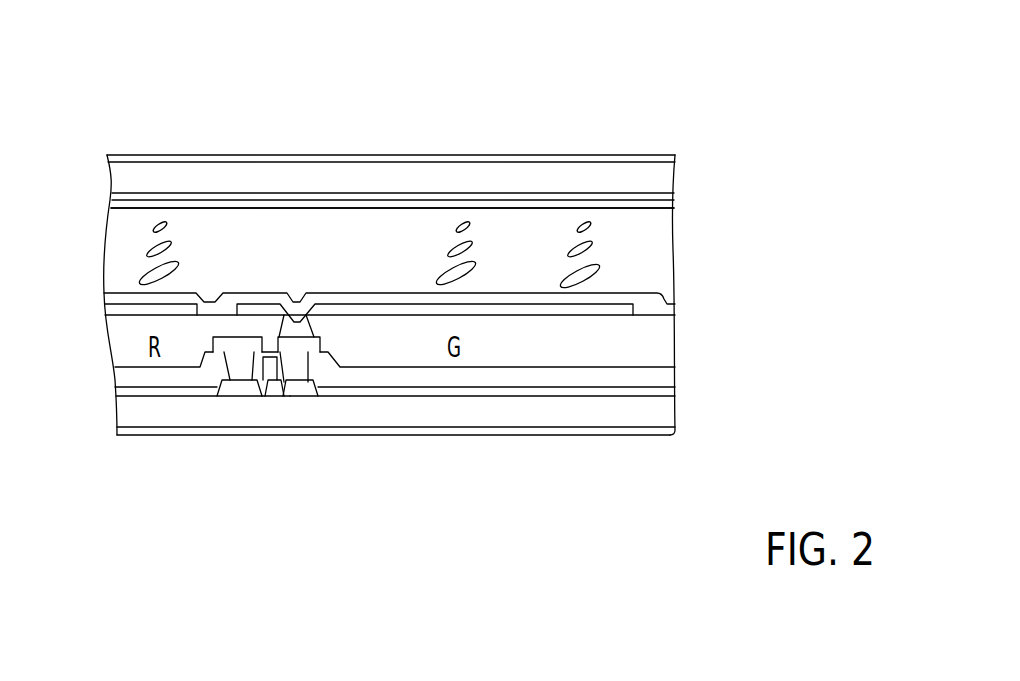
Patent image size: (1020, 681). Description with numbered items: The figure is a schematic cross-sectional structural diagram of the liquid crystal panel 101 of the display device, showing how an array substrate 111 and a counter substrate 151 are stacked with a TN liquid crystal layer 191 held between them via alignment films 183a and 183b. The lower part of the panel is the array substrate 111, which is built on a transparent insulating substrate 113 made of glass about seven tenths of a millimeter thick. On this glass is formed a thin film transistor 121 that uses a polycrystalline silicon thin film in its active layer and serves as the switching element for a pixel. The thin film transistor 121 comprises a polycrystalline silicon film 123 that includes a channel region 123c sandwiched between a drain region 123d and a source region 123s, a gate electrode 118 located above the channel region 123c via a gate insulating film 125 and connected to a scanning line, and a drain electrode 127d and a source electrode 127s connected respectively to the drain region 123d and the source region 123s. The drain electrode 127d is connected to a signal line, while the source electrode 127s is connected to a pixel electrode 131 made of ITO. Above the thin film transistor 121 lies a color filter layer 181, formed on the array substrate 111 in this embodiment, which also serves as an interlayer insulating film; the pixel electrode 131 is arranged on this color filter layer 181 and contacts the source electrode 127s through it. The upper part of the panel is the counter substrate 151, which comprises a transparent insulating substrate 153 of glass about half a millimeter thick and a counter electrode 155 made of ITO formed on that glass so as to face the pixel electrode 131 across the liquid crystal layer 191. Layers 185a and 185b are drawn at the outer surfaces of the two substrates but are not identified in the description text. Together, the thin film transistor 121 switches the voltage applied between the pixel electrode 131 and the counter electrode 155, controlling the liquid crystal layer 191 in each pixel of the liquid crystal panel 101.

The liquid crystal panel 101 is at (548, 98).
The array substrate 111 is at (708, 393).
The transparent insulating substrate 113 is at (670, 413).
The gate electrode 118 is at (268, 358).
The thin film transistor 121 is at (278, 414).
The polycrystalline silicon film 123 is at (248, 476).
The drain region 123d is at (233, 391).
The channel region 123c is at (270, 394).
The source region 123s is at (330, 448).
The gate insulating film 125 is at (283, 368).
The drain electrode 127d is at (239, 352).
The source electrode 127s is at (293, 350).
The pixel electrode 131 is at (508, 304).
The counter substrate 151 is at (683, 183).
The transparent insulating substrate 153 is at (645, 182).
The counter electrode 155 is at (599, 190).
The color filter layer 181 is at (642, 352).
The alignment film 183a is at (667, 310).
The alignment film 183b is at (660, 208).
The alignment film 185a is at (652, 435).
The alignment film 185b is at (677, 154).
The TN liquid crystal layer 191 is at (648, 272).